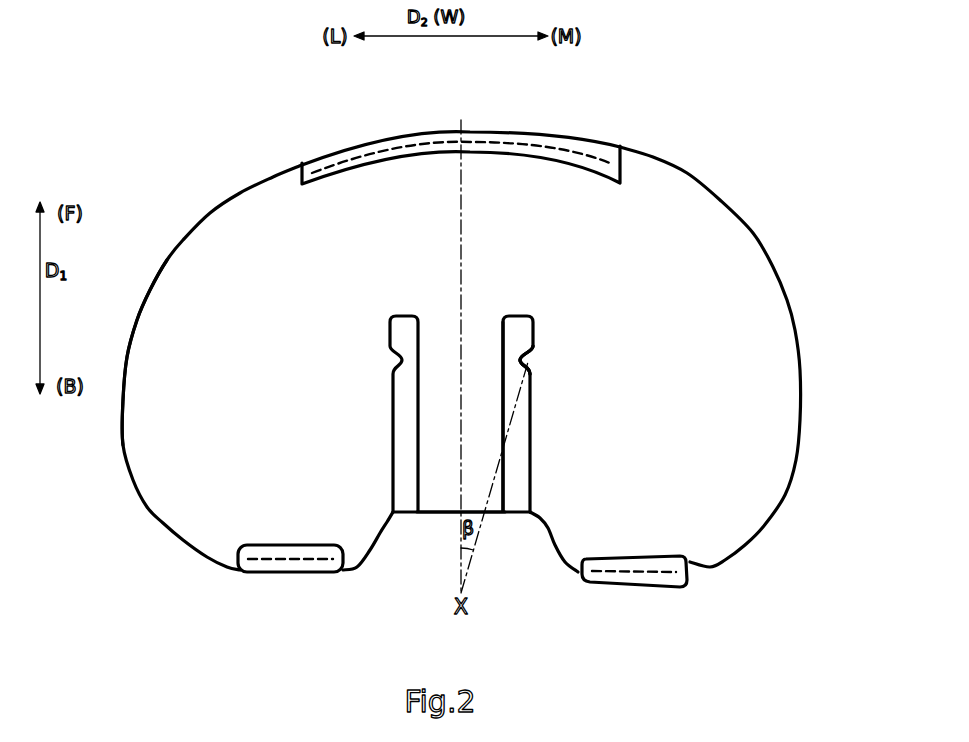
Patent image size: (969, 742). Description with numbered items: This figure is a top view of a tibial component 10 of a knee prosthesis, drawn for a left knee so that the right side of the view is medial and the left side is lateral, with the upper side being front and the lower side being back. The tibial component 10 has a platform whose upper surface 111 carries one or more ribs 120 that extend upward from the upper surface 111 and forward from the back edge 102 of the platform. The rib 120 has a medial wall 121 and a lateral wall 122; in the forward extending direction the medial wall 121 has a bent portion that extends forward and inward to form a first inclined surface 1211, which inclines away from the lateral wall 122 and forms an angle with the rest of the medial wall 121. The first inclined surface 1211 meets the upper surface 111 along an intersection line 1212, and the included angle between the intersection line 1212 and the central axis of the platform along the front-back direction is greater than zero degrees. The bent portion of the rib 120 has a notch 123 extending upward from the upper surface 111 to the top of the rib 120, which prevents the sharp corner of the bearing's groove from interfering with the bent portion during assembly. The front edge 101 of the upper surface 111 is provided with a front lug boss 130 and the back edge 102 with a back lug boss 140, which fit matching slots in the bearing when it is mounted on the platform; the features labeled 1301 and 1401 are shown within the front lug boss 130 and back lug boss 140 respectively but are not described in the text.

The tibial component 10 is at (778, 218).
The front edge 101 is at (470, 130).
The back edge 102 is at (452, 513).
The upper surface 111 is at (148, 323).
The rib 120 is at (524, 391).
The medial wall 121 is at (579, 402).
The first inclined surface 1211 is at (533, 333).
The intersection line 1212 is at (526, 360).
The lateral wall 122 is at (502, 413).
The notch 123 is at (397, 364).
The front lug boss 130 is at (491, 123).
The reinforcing layer 1301 is at (364, 148).
The back lug boss 140 is at (707, 567).
The bottom pad 1401 is at (303, 567).